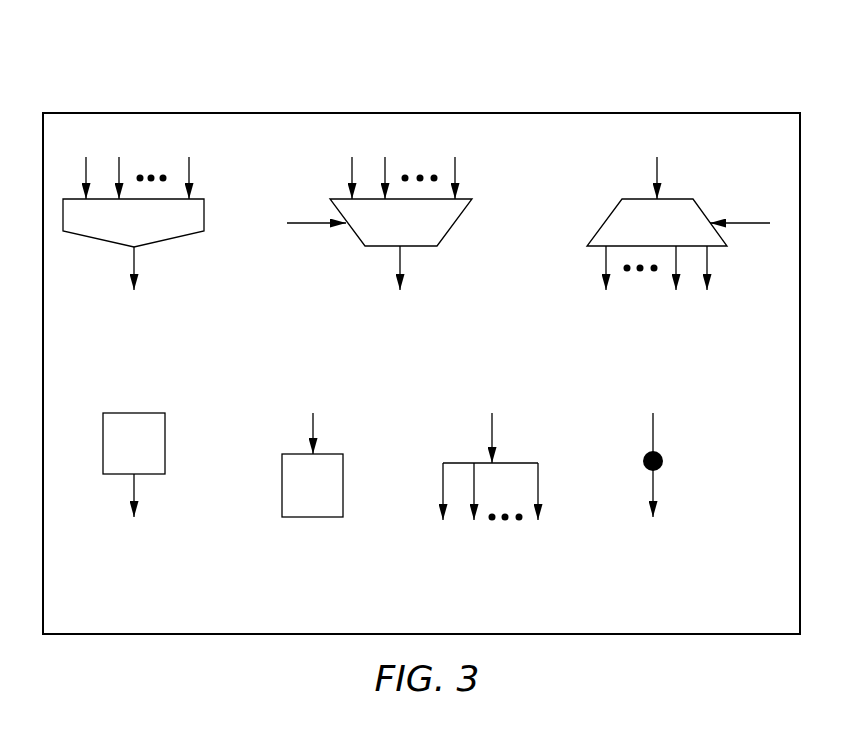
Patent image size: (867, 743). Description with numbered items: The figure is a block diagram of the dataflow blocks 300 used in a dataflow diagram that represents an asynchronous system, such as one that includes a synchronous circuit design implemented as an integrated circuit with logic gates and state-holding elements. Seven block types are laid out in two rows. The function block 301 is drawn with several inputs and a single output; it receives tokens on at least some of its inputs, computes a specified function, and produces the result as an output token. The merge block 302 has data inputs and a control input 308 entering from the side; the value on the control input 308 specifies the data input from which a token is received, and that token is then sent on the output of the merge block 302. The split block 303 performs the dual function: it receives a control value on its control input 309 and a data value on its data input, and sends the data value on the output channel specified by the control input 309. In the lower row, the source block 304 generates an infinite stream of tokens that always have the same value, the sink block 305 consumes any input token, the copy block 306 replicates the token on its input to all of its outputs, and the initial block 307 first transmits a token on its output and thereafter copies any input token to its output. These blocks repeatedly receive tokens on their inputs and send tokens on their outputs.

The dataflow blocks 300 is at (661, 59).
The function block 301 is at (133, 323).
The merge block 302 is at (400, 323).
The split block 303 is at (657, 323).
The source block 304 is at (133, 555).
The sink block 305 is at (313, 555).
The copy block 306 is at (487, 555).
The initial block 307 is at (653, 555).
The control input 308 is at (306, 219).
The control input 309 is at (753, 219).